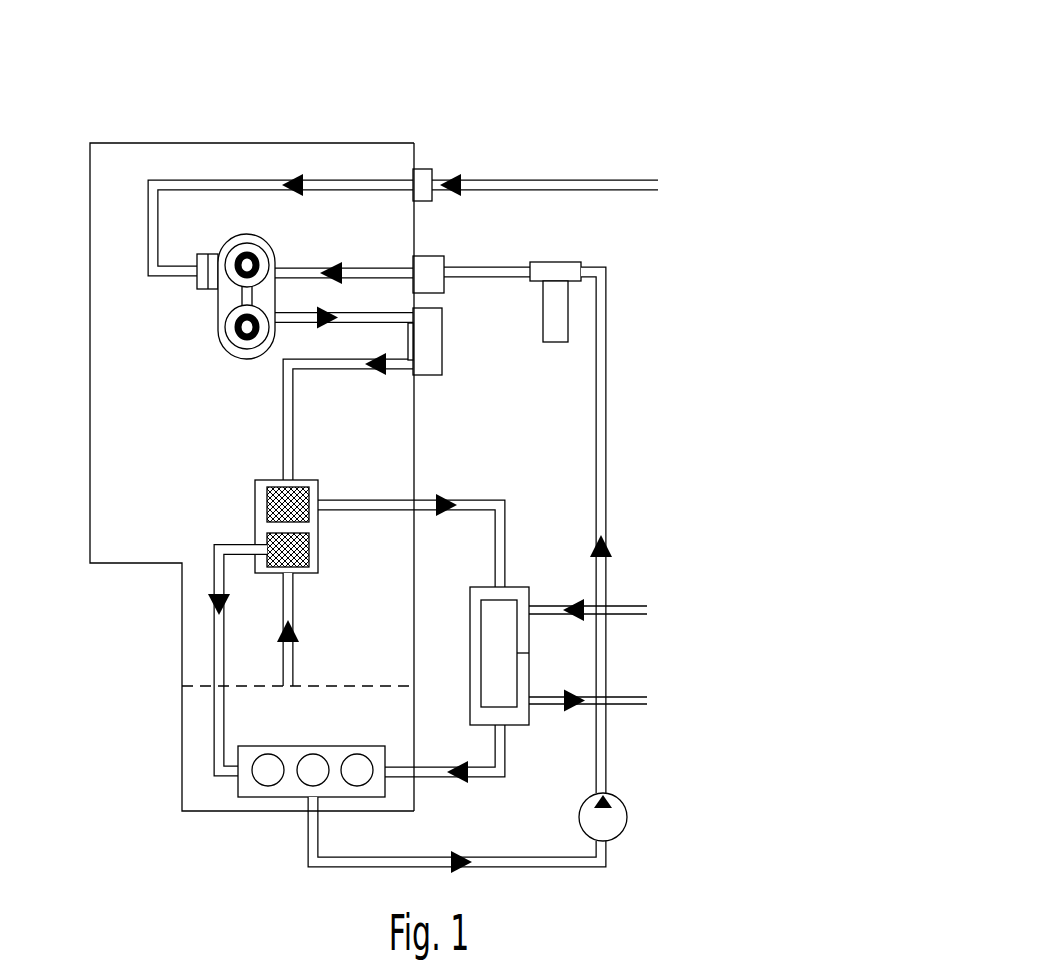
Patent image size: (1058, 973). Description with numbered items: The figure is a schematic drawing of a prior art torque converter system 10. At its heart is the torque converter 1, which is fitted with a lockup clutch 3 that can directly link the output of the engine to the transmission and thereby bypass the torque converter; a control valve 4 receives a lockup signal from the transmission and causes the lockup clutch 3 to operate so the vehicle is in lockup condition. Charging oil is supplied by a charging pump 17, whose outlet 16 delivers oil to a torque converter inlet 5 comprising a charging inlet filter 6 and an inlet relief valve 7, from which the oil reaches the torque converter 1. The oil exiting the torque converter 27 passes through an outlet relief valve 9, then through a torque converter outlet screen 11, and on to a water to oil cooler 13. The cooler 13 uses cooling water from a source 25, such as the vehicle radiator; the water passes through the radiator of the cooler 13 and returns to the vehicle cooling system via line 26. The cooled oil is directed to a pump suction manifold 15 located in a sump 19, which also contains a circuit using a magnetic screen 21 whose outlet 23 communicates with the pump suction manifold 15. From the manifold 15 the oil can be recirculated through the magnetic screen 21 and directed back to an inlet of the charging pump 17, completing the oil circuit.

The torque converter 1 is at (217, 340).
The lockup clutch 3 is at (203, 290).
The control valve 4 is at (424, 169).
The torque converter inlet 5 is at (605, 282).
The charging inlet filter 6 is at (545, 262).
The inlet relief valve 7 is at (445, 287).
The outlet relief valve 9 is at (442, 359).
The torque converter system 10 is at (656, 110).
The torque converter outlet screen 11 is at (313, 480).
The water to oil cooler 13 is at (517, 587).
The pump suction manifold 15 is at (270, 797).
The outlet of the charging oil pump 16 is at (605, 737).
The charging pump 17 is at (627, 823).
The sump 19 is at (182, 767).
The magnetic screen 21 is at (313, 573).
The outlet of the magnetic screen 23 is at (230, 545).
The cooling water source 25 is at (630, 603).
The cooling water return line 26 is at (630, 697).
The oil exiting the torque converter 27 is at (293, 325).